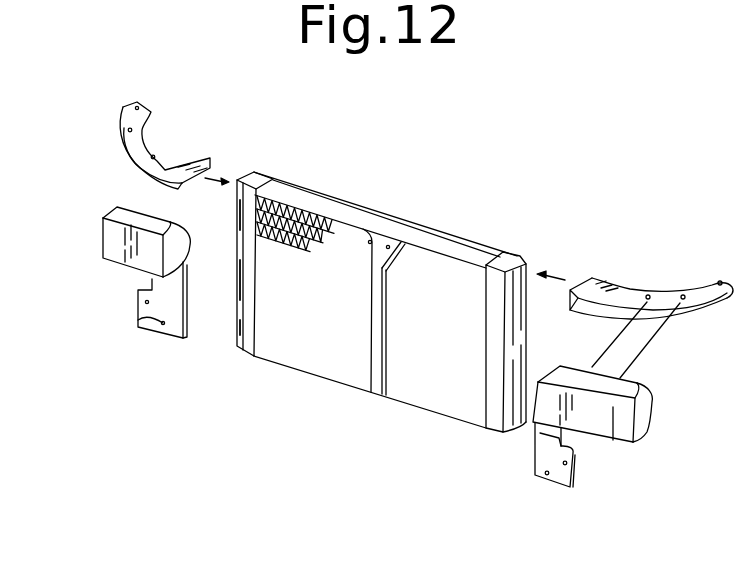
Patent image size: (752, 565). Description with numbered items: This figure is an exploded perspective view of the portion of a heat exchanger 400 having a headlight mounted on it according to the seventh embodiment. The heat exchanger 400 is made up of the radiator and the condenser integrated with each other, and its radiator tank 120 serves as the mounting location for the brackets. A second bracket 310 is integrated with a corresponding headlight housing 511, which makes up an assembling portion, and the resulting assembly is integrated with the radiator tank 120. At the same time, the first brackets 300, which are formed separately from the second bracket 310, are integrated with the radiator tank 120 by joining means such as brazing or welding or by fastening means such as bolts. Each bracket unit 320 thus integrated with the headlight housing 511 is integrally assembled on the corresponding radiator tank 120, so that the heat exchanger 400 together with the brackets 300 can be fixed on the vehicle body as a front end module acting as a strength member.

The heat exchanger 400 is at (421, 290).
The radiator tank 120 is at (520, 246).
The first bracket 300 is at (168, 155).
The headlight housing 511 is at (112, 241).
The bracket unit 320 is at (136, 322).
The second bracket 310 is at (565, 488).